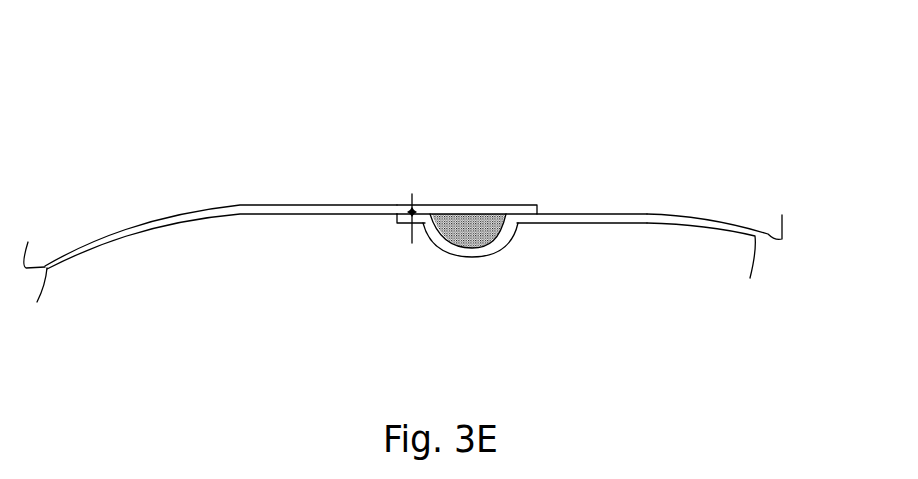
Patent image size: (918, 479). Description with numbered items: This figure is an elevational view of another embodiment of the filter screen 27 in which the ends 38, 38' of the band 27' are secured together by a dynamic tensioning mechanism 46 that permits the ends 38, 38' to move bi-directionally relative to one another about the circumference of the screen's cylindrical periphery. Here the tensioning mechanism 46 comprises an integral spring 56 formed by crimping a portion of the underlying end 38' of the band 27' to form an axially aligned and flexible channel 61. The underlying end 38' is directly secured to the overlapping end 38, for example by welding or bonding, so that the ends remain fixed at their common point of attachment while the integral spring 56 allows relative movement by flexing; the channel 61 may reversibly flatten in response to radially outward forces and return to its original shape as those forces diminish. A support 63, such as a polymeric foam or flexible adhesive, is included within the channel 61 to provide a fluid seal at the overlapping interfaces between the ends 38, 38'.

The filter screen 27 is at (210, 165).
The band 27' is at (714, 212).
The overlapping end 38 is at (467, 179).
The underlying end 38' is at (522, 254).
The dynamic tensioning mechanism 46 is at (436, 228).
The channel 61 is at (450, 238).
The integral spring 56 is at (502, 236).
The support 63 is at (480, 218).